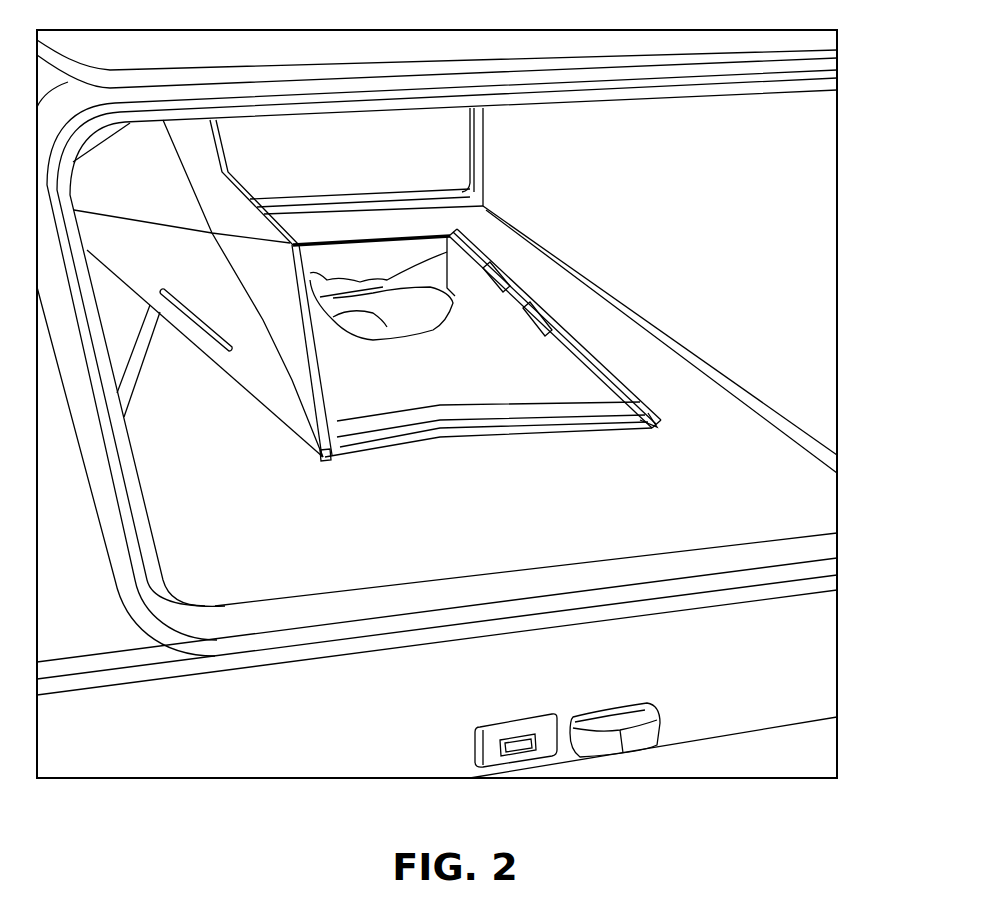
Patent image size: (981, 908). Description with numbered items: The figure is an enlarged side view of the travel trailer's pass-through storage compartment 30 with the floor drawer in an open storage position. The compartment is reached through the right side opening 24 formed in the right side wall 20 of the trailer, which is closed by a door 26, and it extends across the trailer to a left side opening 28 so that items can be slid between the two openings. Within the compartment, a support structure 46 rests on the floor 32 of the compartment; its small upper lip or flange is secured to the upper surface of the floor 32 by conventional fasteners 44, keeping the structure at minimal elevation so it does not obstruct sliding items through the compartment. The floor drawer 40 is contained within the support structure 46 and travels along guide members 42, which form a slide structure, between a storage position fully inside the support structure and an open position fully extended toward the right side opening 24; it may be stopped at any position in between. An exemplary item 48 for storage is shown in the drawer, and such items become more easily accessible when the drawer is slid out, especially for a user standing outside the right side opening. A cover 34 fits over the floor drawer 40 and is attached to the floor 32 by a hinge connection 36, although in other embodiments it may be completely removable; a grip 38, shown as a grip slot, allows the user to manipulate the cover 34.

The right side wall 20 is at (88, 570).
The right side opening 24 is at (763, 95).
The door 26 is at (783, 35).
The left side opening 28 is at (473, 148).
The pass-through storage compartment 30 is at (690, 223).
The floor 32 is at (510, 512).
The cover 34 is at (268, 413).
The hinge connection 36 is at (336, 456).
The grip 38 is at (201, 328).
The floor drawer 40 is at (420, 372).
The guide members 42 is at (545, 332).
The fasteners 44 is at (518, 283).
The support structure 46 is at (624, 398).
The item for storage 48 is at (387, 280).